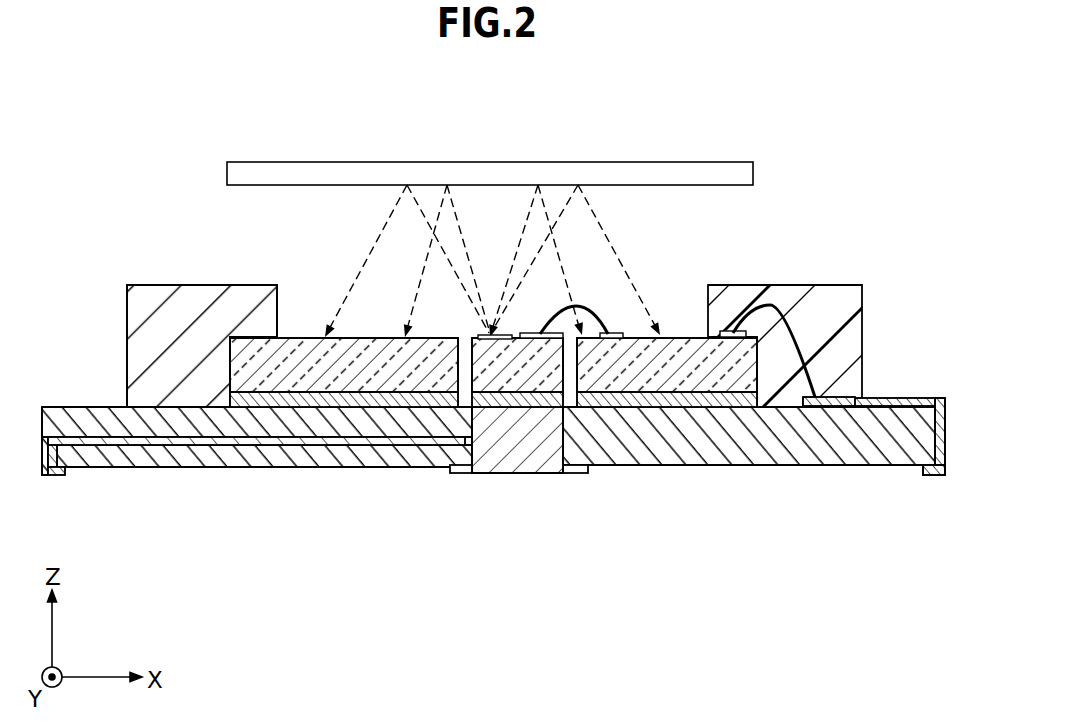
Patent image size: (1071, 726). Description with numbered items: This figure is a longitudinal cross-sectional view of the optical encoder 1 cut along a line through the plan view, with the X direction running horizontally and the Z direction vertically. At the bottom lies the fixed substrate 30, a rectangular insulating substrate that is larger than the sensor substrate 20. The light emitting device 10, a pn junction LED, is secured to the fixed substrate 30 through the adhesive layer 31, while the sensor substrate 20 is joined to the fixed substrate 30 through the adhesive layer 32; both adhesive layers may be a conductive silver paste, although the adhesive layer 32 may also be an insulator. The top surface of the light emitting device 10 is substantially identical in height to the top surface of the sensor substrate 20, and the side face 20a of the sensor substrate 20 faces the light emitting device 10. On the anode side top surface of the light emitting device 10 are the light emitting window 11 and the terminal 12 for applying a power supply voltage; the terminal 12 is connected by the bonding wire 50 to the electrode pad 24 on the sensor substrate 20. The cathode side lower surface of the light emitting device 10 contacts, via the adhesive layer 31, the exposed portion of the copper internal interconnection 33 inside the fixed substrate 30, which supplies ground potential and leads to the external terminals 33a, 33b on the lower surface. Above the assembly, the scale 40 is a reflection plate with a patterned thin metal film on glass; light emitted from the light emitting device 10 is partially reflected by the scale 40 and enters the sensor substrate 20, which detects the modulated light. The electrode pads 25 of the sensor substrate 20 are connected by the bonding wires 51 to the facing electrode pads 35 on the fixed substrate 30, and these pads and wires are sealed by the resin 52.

The optical encoder 1 is at (140, 148).
The scale 40 is at (700, 163).
The resin 52 is at (140, 285).
The fixed substrate 30 is at (828, 450).
The internal interconnection 33 is at (398, 441).
The external terminal 33a is at (57, 474).
The external terminal 33b is at (492, 447).
The electrode pad 35 is at (835, 399).
The adhesive layer 32 is at (343, 400).
The adhesive layer 31 is at (522, 397).
The sensor substrate 20 is at (708, 370).
The side face of light emitting element 20a is at (570, 368).
The light emitting device 10 is at (545, 368).
The light emitting window 11 is at (478, 337).
The terminal 12 is at (528, 333).
The electrode pad 24 is at (610, 333).
The electrode pad 25 is at (731, 331).
The bonding wire 50 is at (585, 312).
The bonding wire 51 is at (778, 303).